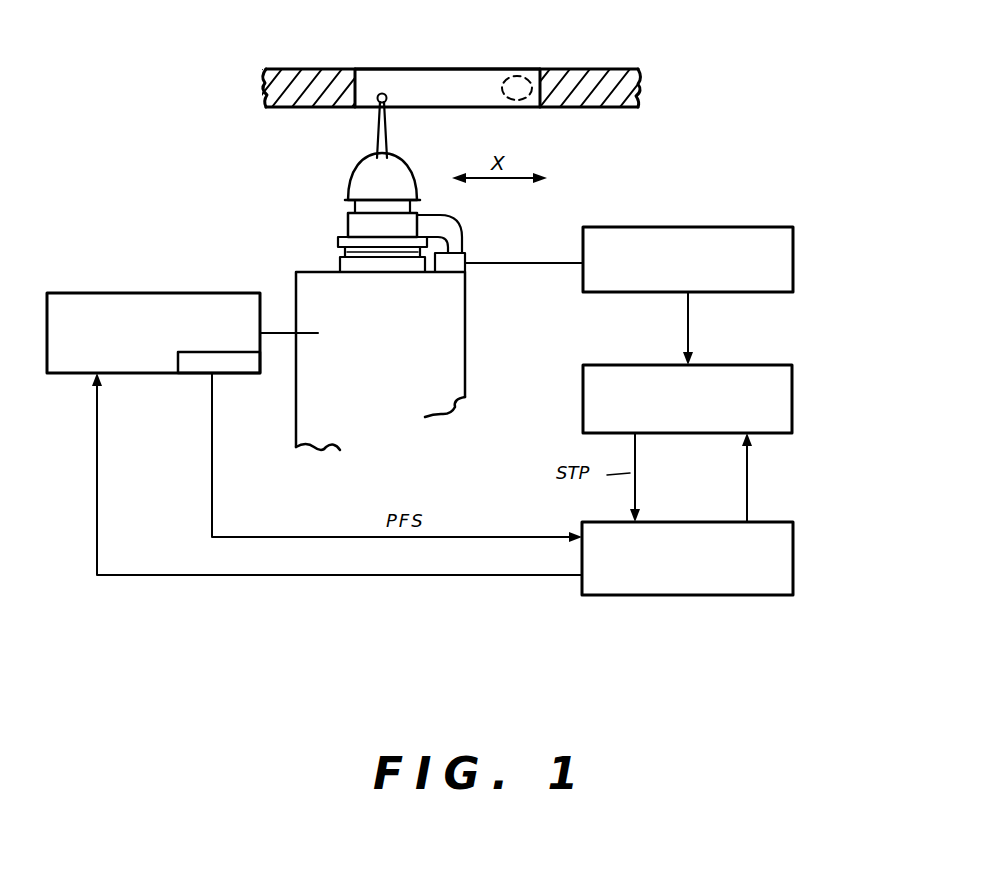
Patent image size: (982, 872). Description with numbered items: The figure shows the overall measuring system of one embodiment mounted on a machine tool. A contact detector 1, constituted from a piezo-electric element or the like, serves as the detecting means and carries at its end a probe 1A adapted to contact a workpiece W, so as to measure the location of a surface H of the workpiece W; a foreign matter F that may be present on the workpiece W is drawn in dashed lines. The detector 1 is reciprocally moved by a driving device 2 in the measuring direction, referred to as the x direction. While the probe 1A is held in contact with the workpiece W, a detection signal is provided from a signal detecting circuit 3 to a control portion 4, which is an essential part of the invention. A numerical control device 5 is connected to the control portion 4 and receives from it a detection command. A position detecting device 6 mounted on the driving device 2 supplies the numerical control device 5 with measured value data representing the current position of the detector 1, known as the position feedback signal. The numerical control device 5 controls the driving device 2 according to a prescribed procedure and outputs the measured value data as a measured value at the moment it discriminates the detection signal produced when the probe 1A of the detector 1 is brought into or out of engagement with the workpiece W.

The contact detector 1 is at (352, 181).
The probe 1A is at (387, 128).
The driving device 2 is at (177, 292).
The signal detecting circuit 3 is at (795, 256).
The control portion 4 is at (795, 396).
The numerical control (NC) device 5 is at (796, 568).
The position detecting device 6 is at (230, 362).
The surface H is at (374, 69).
The foreign matter F is at (521, 70).
The workpiece W is at (600, 69).